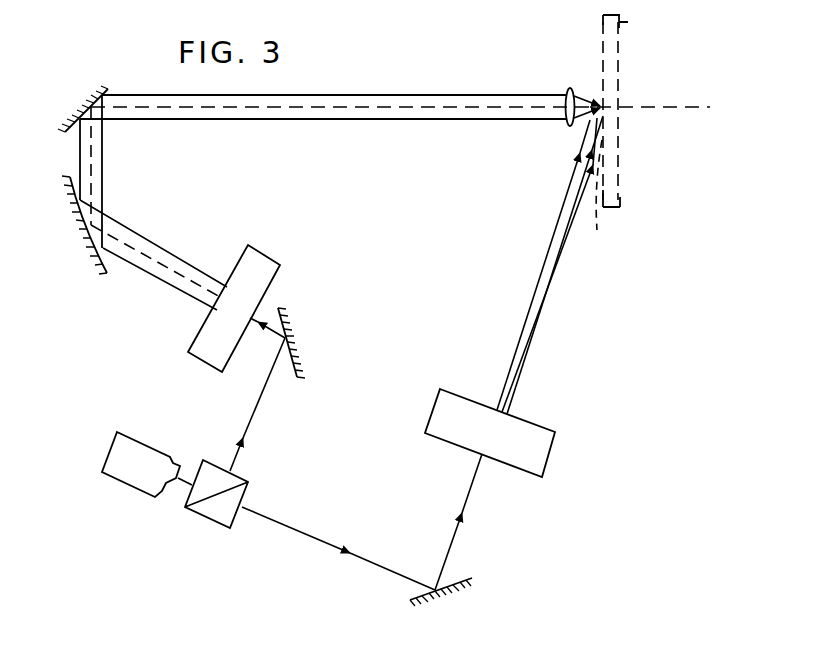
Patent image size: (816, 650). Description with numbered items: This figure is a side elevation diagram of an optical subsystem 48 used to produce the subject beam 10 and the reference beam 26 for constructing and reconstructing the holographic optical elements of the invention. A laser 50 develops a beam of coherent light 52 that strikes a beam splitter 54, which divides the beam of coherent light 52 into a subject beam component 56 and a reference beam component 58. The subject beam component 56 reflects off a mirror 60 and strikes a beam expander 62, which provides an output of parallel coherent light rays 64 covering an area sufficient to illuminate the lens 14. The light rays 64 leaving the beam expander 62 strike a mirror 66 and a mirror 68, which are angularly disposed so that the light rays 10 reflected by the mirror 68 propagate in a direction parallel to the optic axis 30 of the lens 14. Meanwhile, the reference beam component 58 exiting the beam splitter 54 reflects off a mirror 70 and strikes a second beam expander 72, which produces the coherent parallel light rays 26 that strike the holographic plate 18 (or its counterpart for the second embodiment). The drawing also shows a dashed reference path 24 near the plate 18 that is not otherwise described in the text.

The subject beam 10 is at (153, 95).
The lens 14 is at (571, 88).
The plate 18 is at (628, 23).
The reflected beam path 24 is at (607, 199).
The reference beam 26 is at (545, 287).
The optic axis 30 is at (176, 106).
The optical subsystem 48 is at (246, 559).
The laser 50 is at (133, 478).
The beam of coherent light 52 is at (190, 486).
The beam splitter 54 is at (219, 518).
The subject beam component 56 is at (259, 412).
The reference beam component 58 is at (292, 538).
The mirror 60 is at (281, 306).
The beam expander 62 is at (258, 257).
The parallel coherent light rays 64 is at (175, 276).
The mirror 66 is at (107, 267).
The mirror 68 is at (108, 85).
The mirror 70 is at (458, 582).
The beam expander 72 is at (538, 428).